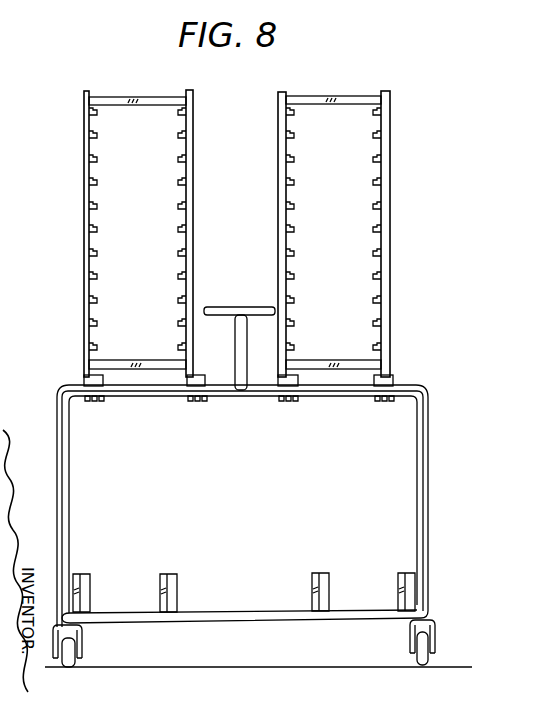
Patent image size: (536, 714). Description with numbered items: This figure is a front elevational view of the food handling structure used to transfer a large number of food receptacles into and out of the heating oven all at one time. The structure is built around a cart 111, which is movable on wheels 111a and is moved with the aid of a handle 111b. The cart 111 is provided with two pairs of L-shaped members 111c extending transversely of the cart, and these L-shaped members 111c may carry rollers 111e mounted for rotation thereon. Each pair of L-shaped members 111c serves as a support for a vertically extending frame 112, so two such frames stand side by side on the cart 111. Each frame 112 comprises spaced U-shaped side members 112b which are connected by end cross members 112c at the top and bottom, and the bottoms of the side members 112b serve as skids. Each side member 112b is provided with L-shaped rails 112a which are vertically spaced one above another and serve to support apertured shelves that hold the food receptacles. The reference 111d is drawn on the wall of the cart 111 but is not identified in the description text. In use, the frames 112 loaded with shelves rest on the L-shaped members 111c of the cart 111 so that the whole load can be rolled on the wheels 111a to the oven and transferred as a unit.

The cart 111 is at (52, 428).
The wheels 111a is at (84, 667).
The handle 111b is at (247, 372).
The L-shaped members 111c is at (178, 398).
The tank inner wall 111d is at (417, 486).
The rollers 111e is at (194, 402).
The vertically extending frame 112 is at (78, 193).
The L-shaped rails 112a is at (182, 207).
The U-shaped side members 112b is at (194, 178).
The end cross members 112c is at (138, 104).